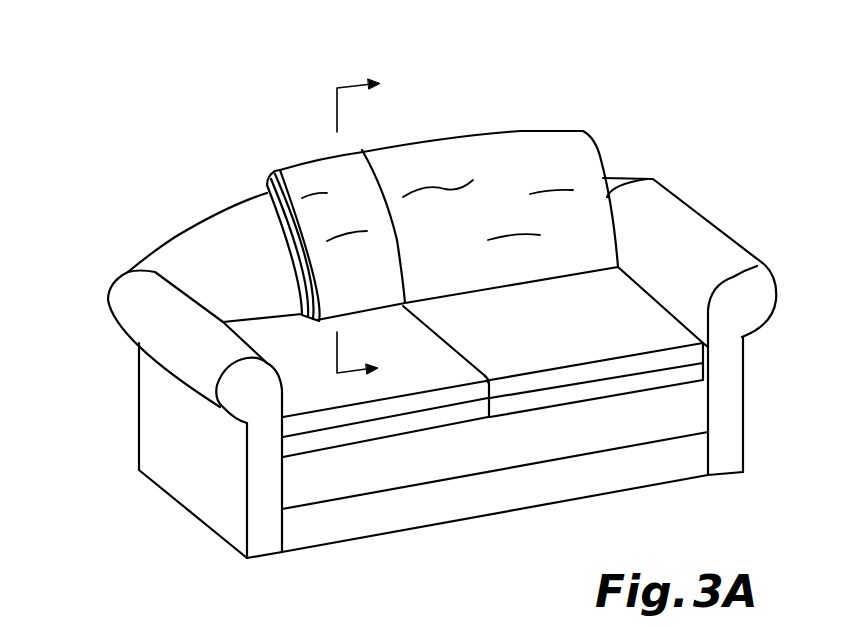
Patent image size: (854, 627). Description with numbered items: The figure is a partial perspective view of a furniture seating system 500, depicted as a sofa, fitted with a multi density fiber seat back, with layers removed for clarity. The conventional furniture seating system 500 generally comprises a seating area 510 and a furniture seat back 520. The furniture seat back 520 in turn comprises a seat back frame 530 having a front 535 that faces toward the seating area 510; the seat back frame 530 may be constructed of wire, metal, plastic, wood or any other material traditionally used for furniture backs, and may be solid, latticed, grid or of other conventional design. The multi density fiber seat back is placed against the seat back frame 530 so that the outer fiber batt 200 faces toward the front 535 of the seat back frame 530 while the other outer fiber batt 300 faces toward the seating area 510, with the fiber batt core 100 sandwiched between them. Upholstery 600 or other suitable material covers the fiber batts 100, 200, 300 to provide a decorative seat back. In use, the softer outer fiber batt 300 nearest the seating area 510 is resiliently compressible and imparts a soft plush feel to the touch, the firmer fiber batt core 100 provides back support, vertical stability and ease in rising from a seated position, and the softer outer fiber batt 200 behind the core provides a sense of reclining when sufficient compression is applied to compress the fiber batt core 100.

The furniture seating system 500 is at (134, 99).
The seating area 510 is at (610, 372).
The furniture seat back 520 is at (267, 188).
The seat back frame 530 is at (188, 227).
The front 535 is at (172, 263).
The upholstery 600 is at (300, 187).
The fiber batt core 100 is at (270, 172).
The outer fiber batt 200 is at (267, 178).
The outer fiber batt 300 is at (277, 167).